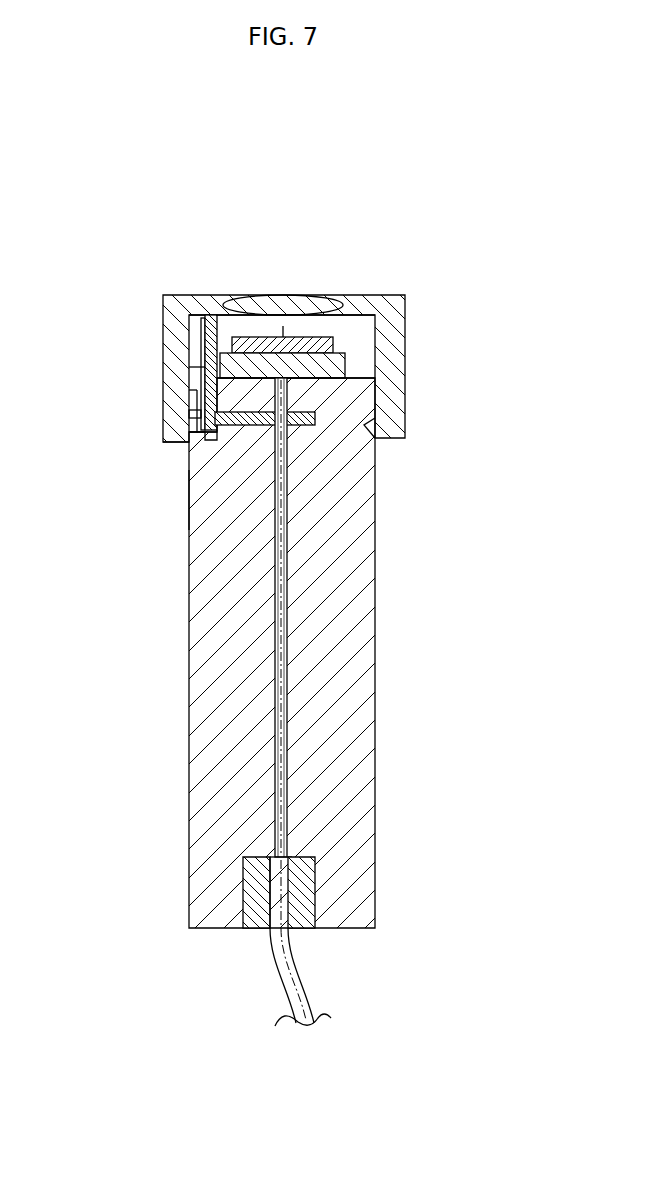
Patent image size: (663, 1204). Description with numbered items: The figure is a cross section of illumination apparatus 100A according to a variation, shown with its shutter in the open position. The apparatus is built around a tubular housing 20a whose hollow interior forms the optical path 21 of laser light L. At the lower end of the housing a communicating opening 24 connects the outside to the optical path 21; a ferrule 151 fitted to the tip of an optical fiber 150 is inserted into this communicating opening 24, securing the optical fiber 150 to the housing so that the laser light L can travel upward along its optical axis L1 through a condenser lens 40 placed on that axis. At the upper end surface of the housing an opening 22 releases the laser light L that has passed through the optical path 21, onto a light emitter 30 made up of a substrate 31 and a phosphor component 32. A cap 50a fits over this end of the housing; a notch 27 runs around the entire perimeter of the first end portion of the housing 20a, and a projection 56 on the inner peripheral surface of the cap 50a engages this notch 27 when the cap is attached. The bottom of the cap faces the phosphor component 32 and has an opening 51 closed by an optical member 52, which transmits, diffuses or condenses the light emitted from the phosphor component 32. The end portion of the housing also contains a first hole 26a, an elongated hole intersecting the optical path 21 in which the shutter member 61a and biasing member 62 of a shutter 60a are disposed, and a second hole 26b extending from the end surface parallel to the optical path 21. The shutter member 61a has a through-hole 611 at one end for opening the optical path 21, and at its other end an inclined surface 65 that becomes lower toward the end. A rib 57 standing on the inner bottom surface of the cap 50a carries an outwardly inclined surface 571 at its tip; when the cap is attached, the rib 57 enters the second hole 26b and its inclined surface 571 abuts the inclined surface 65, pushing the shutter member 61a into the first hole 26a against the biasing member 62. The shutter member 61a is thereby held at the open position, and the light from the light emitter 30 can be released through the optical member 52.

The illumination apparatus 100A is at (340, 235).
The cap 50a is at (422, 300).
The opening 51 is at (227, 295).
The optical member 52 is at (297, 295).
The projection 56 is at (377, 431).
The notch 27 is at (186, 438).
The light emitter 30 is at (84, 361).
The substrate 31 is at (212, 375).
The phosphor component 32 is at (203, 350).
The rib 57 is at (202, 366).
The second hole 26b is at (198, 392).
The inclined surface 65 is at (194, 414).
The inclined surface 571 is at (203, 440).
The first hole 26a is at (206, 452).
The opening 22 is at (283, 376).
The housing 20a is at (398, 665).
The through-hole 611 is at (192, 500).
The shutter 60a is at (455, 488).
The shutter member 61a is at (307, 432).
The biasing member 62 is at (303, 426).
The condenser lens 40 is at (277, 618).
The laser light L is at (277, 658).
The optical path 21 is at (287, 845).
The communicating opening 24 is at (310, 923).
The ferrule 151 is at (257, 920).
The optical fiber 150 is at (293, 1000).
The optical axis L1 is at (281, 1003).